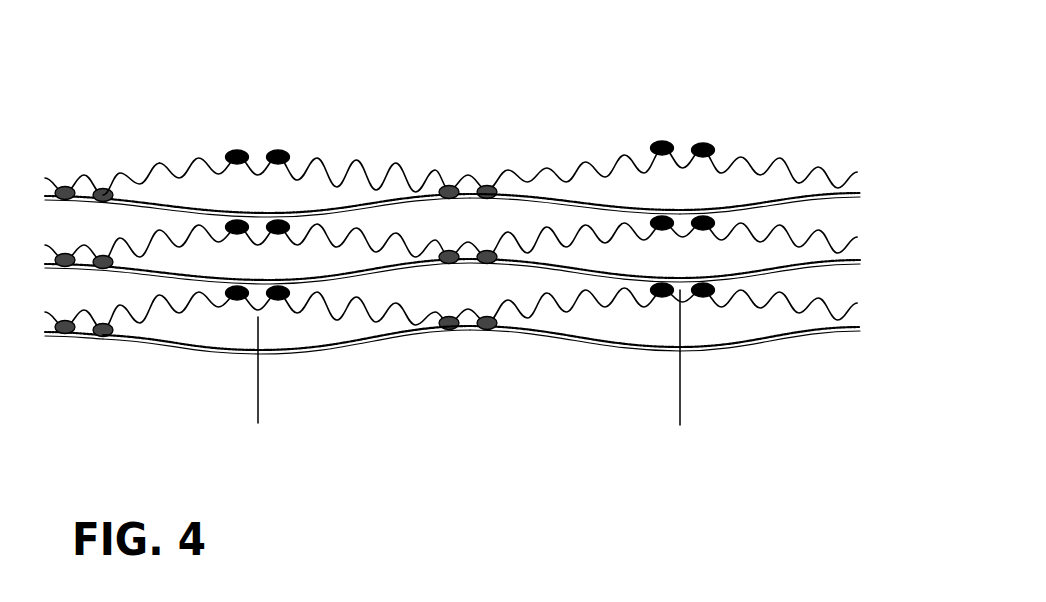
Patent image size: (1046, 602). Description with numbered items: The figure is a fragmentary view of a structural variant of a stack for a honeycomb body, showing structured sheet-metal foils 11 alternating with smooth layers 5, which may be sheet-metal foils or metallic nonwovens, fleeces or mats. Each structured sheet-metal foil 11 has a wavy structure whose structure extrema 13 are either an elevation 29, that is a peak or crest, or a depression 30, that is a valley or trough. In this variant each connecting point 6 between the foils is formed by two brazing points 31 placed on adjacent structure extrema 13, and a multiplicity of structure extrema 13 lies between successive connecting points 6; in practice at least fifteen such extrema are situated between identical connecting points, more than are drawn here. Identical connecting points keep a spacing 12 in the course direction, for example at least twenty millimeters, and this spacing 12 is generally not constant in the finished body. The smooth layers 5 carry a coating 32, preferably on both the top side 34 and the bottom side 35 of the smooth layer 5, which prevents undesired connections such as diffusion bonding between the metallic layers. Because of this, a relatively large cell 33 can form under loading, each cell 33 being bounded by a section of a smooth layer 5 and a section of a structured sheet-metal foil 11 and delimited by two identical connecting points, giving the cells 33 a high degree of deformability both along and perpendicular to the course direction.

The smooth layer 5 is at (765, 348).
The connecting point 6 is at (500, 124).
The structured sheet-metal foil 11 is at (319, 158).
The spacing 12 is at (669, 412).
The structure extremum 13 is at (42, 83).
The elevation 29 is at (83, 178).
The depression 30 is at (143, 184).
The brazing point 31 is at (445, 184).
The coating 32 is at (758, 203).
The cell 33 is at (199, 326).
The top side 34 is at (836, 167).
The bottom side 35 is at (818, 182).